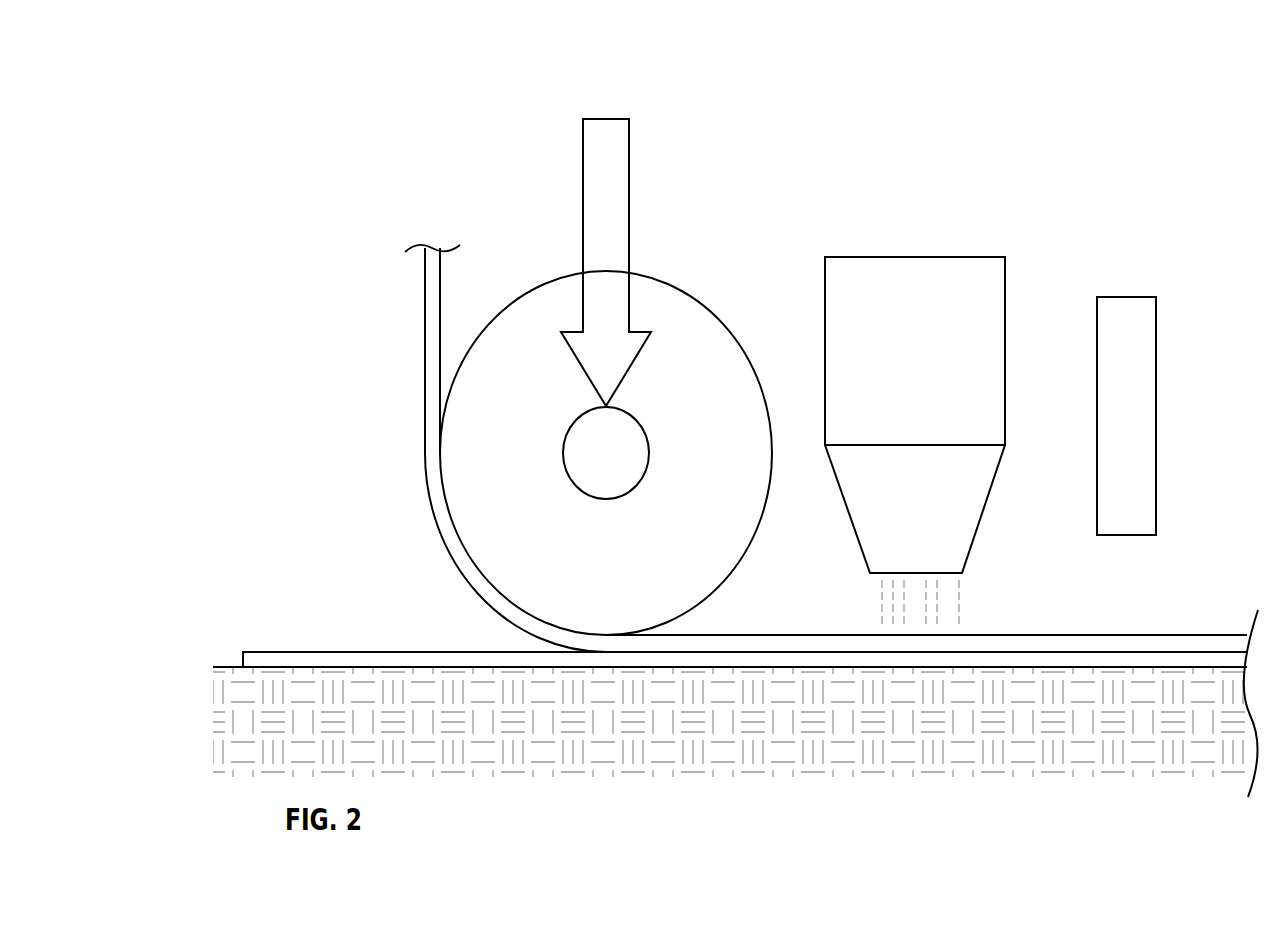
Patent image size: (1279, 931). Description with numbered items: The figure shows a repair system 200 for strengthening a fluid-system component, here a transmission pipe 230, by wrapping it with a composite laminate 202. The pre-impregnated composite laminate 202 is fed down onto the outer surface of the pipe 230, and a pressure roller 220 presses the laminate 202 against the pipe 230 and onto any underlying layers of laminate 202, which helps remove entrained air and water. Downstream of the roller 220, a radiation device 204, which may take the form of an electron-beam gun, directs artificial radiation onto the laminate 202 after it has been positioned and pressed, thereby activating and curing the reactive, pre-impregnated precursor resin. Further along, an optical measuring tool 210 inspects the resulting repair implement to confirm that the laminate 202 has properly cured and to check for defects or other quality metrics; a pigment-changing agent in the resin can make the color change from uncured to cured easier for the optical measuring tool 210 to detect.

The repair system 200 is at (924, 116).
The composite laminate 202 is at (425, 349).
The radiation device 204 is at (990, 257).
The optical measuring tool 210 is at (1145, 297).
The pressure roller 220 is at (673, 286).
The transmission pipe 230 is at (224, 667).